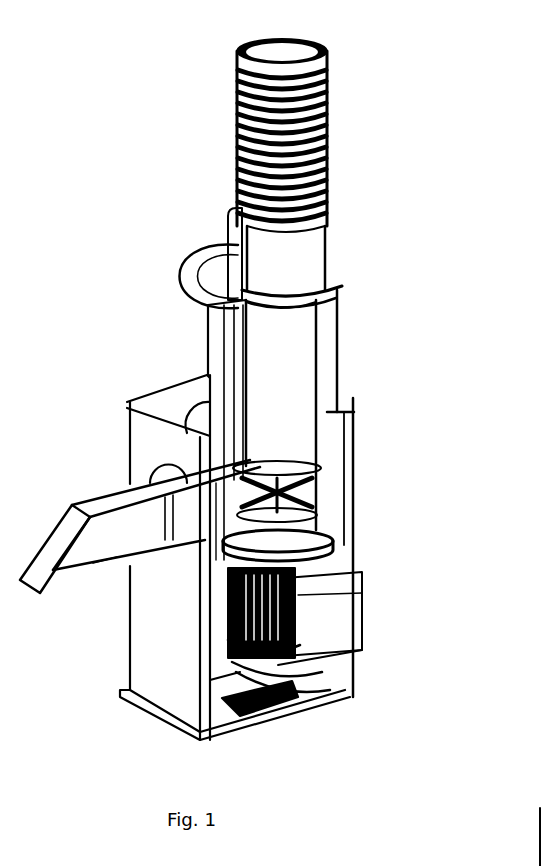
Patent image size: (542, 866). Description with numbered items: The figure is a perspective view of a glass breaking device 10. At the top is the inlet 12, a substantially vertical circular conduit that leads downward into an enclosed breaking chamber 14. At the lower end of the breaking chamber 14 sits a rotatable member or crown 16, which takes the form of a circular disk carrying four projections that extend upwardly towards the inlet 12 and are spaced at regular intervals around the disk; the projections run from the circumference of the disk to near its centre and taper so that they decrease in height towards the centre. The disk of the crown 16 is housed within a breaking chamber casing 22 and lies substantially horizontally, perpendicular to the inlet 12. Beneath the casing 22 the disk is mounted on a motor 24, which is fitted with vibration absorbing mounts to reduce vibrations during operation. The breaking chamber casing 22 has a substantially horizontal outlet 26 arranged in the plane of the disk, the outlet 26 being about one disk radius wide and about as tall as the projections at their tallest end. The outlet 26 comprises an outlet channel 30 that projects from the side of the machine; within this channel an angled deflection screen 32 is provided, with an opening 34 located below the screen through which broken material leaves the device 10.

The glass breaking device 10 is at (387, 323).
The inlet 12 is at (342, 286).
The breaking chamber 14 is at (307, 418).
The crown 16 is at (337, 506).
The breaking chamber casing 22 is at (333, 470).
The motor 24 is at (340, 596).
The outlet 26 is at (157, 487).
The outlet channel 30 is at (120, 557).
The angled deflection screen 32 is at (62, 542).
The opening 34 is at (73, 573).